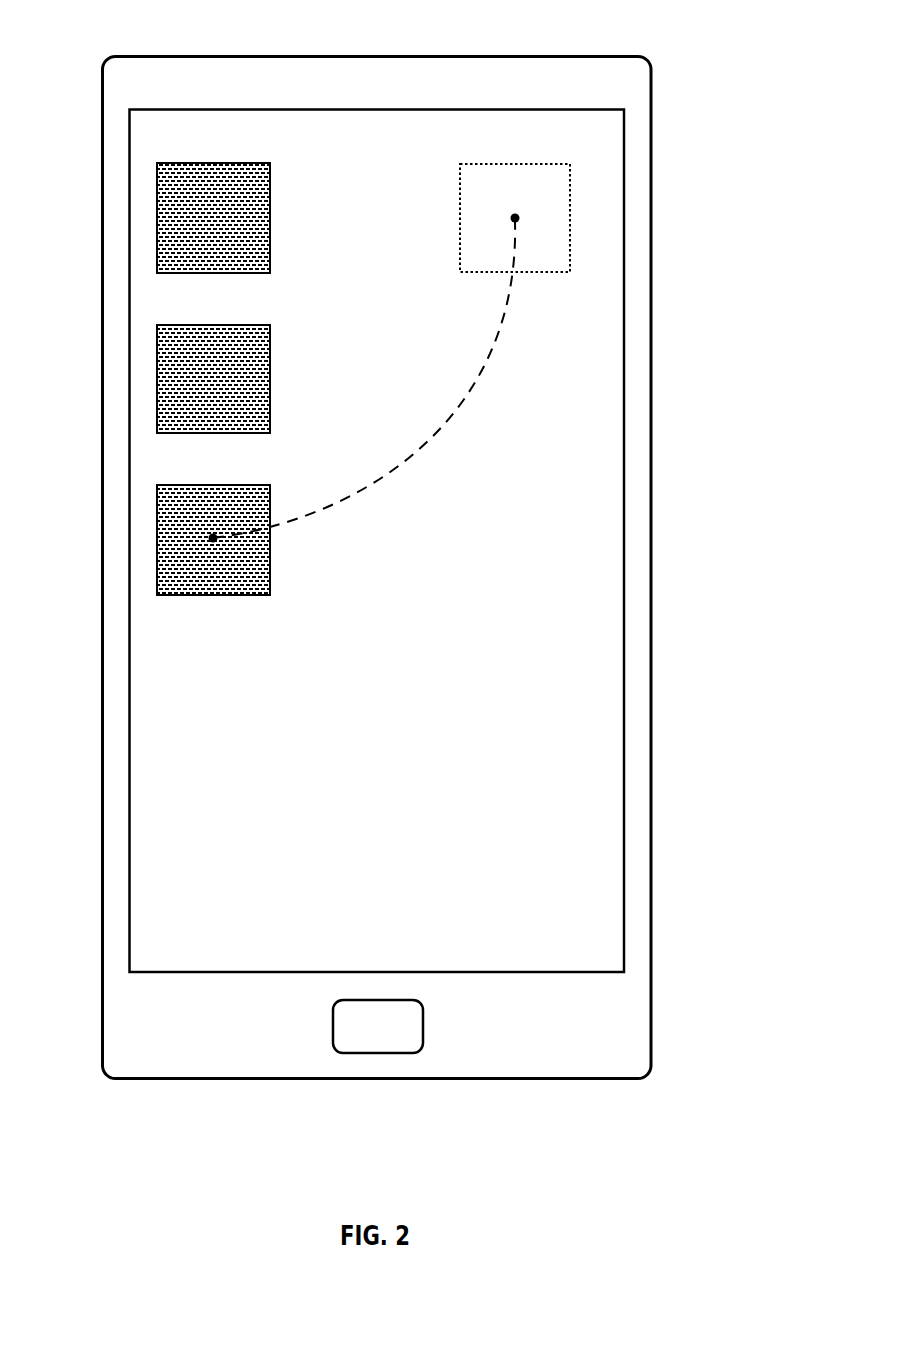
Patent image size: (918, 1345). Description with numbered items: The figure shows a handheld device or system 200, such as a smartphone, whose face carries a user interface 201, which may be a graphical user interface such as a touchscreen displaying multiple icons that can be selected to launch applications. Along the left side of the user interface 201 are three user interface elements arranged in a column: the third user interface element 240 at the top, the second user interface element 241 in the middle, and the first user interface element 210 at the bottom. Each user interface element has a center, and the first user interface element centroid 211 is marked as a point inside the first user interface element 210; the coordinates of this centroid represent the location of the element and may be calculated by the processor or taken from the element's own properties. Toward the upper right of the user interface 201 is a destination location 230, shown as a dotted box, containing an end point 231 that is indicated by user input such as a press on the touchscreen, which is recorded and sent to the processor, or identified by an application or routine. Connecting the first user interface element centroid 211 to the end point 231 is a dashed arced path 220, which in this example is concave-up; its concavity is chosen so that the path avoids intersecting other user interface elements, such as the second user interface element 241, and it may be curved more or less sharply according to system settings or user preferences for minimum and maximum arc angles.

The handheld device or system 200 is at (654, 58).
The user interface 201 is at (635, 107).
The first user interface element 210 is at (155, 539).
The first user interface element centroid 211 is at (208, 546).
The arced path 220 is at (403, 447).
The destination location 230 is at (458, 172).
The end point 231 is at (506, 215).
The third user interface element 240 is at (155, 209).
The second user interface element 241 is at (155, 377).